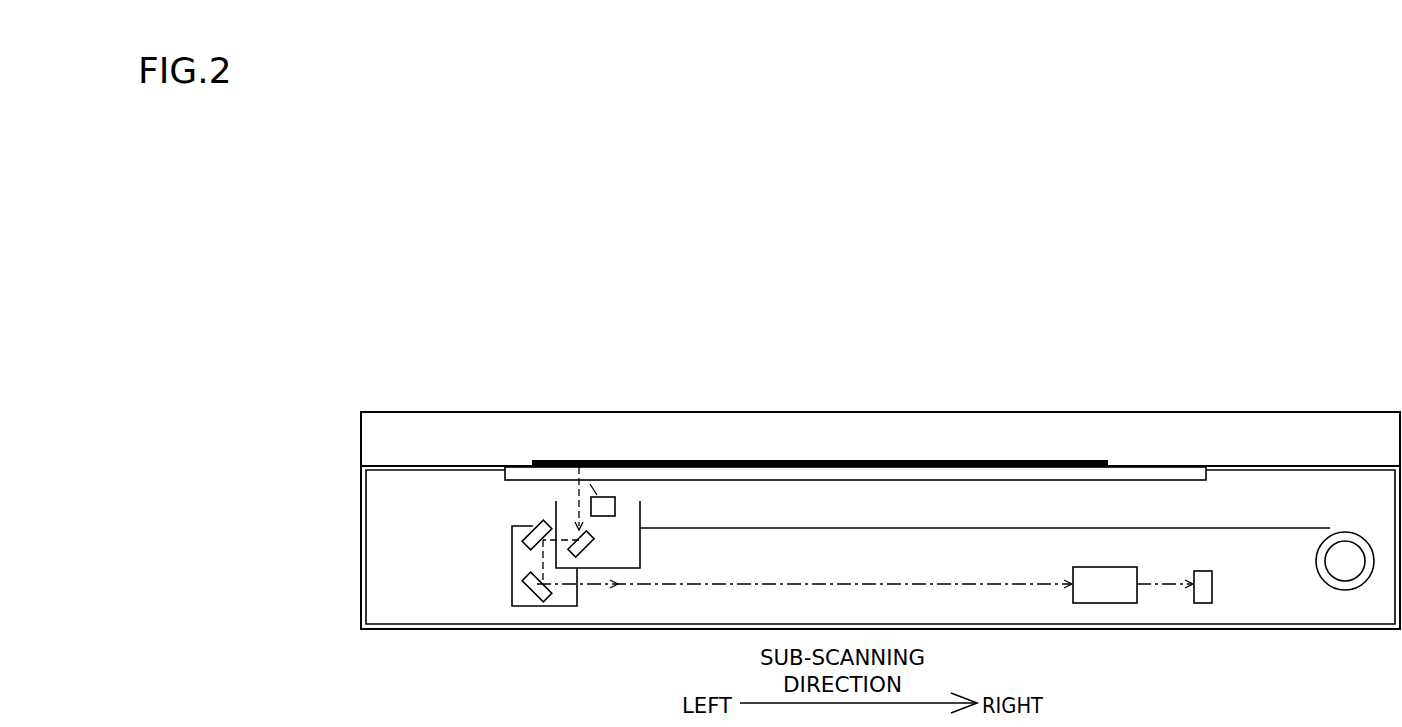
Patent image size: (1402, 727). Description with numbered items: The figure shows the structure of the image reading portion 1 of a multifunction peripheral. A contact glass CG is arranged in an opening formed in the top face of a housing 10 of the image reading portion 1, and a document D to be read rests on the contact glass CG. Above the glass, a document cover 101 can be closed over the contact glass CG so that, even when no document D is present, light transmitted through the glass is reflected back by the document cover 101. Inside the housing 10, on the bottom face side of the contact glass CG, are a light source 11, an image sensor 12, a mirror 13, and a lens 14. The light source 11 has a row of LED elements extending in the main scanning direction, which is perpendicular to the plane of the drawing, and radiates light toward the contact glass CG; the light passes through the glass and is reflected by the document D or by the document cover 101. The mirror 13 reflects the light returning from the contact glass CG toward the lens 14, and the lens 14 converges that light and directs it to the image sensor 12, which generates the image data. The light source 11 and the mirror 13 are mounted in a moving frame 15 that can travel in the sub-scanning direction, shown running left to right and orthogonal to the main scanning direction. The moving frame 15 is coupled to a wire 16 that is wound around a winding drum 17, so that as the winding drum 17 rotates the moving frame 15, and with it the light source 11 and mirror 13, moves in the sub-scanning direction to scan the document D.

The image reading portion 1 is at (376, 390).
The document cover 101 is at (866, 423).
The housing 10 is at (361, 521).
The contact glass CG is at (893, 474).
The document D is at (1085, 460).
The light source 11 is at (608, 507).
The image sensor 12 is at (1203, 575).
The mirror 13 is at (543, 527).
The lens 14 is at (1078, 573).
The moving frame 15 is at (511, 550).
The wire 16 is at (1270, 528).
The winding drum 17 is at (1316, 565).